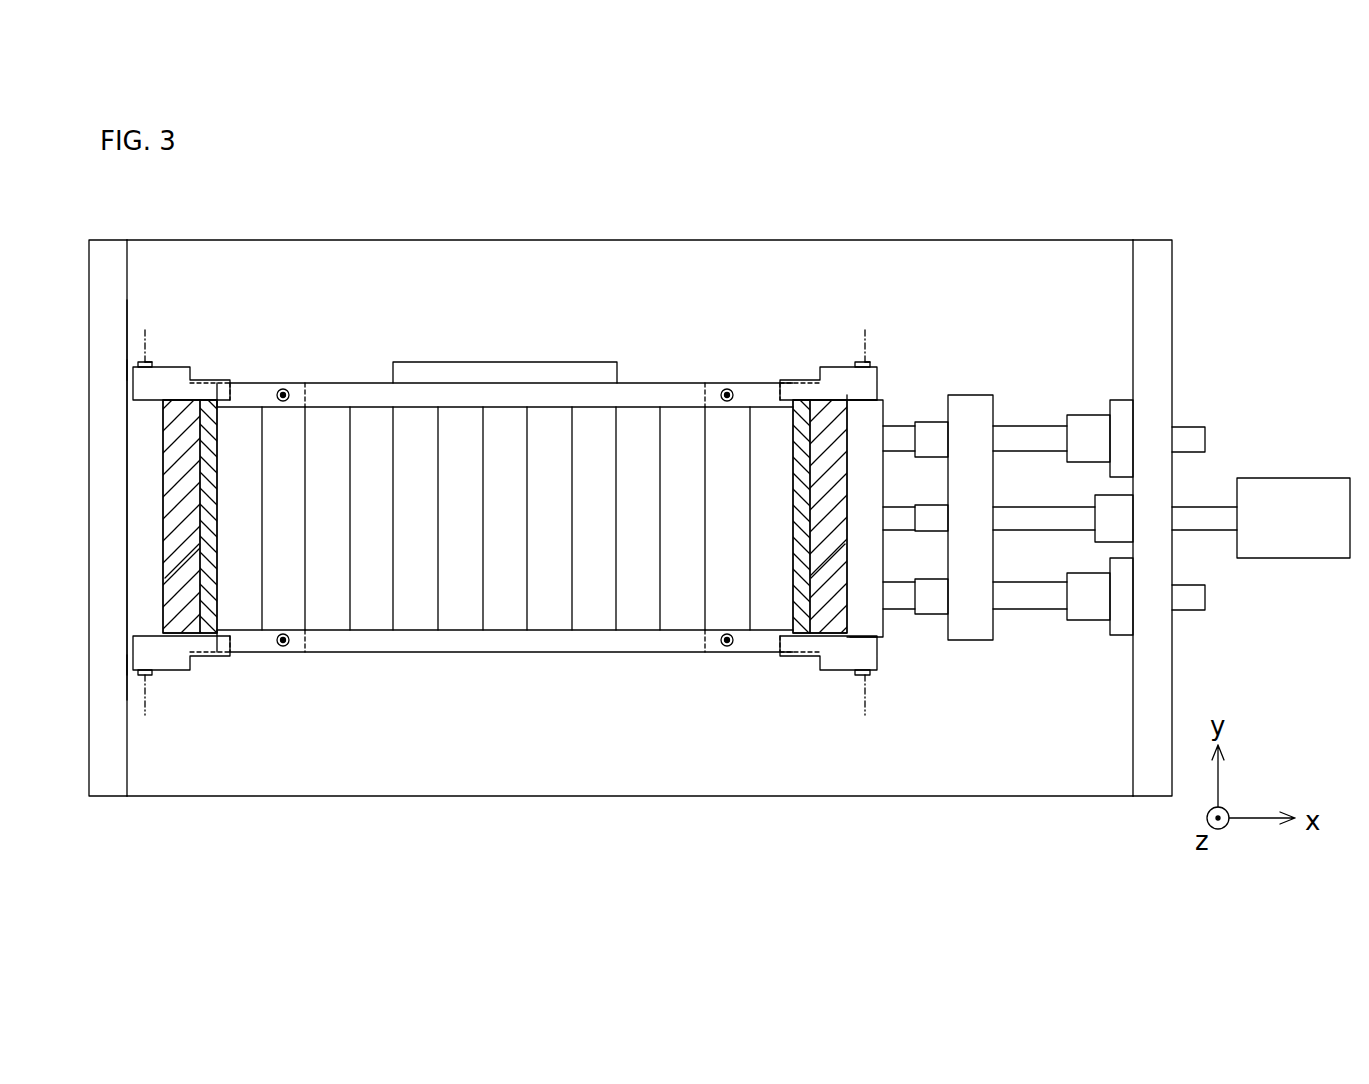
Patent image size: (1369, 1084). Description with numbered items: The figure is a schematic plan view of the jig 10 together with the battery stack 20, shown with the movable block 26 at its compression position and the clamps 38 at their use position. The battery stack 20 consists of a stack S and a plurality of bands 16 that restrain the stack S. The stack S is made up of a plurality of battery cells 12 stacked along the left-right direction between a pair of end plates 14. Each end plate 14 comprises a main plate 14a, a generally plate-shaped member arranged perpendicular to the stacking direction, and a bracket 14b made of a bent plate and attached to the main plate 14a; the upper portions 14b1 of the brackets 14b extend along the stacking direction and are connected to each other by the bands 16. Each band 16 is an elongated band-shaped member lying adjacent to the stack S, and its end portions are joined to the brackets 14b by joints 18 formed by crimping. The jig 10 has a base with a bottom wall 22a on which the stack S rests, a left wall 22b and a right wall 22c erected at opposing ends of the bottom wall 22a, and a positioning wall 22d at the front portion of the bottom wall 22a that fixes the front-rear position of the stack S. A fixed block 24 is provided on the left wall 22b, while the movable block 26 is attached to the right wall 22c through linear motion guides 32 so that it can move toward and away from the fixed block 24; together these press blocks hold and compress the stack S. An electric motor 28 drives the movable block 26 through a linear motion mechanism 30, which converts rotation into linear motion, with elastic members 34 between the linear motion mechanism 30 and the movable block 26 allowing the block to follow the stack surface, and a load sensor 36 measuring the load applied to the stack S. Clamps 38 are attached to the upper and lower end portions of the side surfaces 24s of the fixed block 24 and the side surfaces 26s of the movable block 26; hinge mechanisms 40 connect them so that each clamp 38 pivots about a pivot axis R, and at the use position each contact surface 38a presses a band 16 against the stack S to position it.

The jig 10 is at (1228, 181).
The battery cells 12 is at (727, 615).
The end plates 14 is at (505, 457).
The main plate 14a is at (208, 460).
The bracket 14b is at (190, 490).
The upper portions 14b1 is at (170, 565).
The bands 16 is at (672, 393).
The joints 18 is at (285, 386).
The battery stack 20 is at (621, 473).
The bottom wall 22a is at (1003, 785).
The left wall 22b is at (107, 785).
The right wall 22c is at (1162, 663).
The positioning wall 22d is at (508, 360).
The fixed block 24 is at (138, 562).
The side surfaces 24s is at (138, 370).
The movable block 26 is at (870, 550).
The side surfaces 26s is at (853, 365).
The electric motor 28 is at (1293, 478).
The linear motion mechanism 30 is at (1040, 505).
The linear motion guides 32 is at (1033, 420).
The elastic members 34 is at (932, 420).
The load sensor 36 is at (932, 505).
The clamps 38 is at (505, 516).
The contact surface 38a is at (237, 382).
The hinge mechanisms 40 is at (158, 352).
The stack S is at (848, 275).
The pivot axis R is at (145, 360).